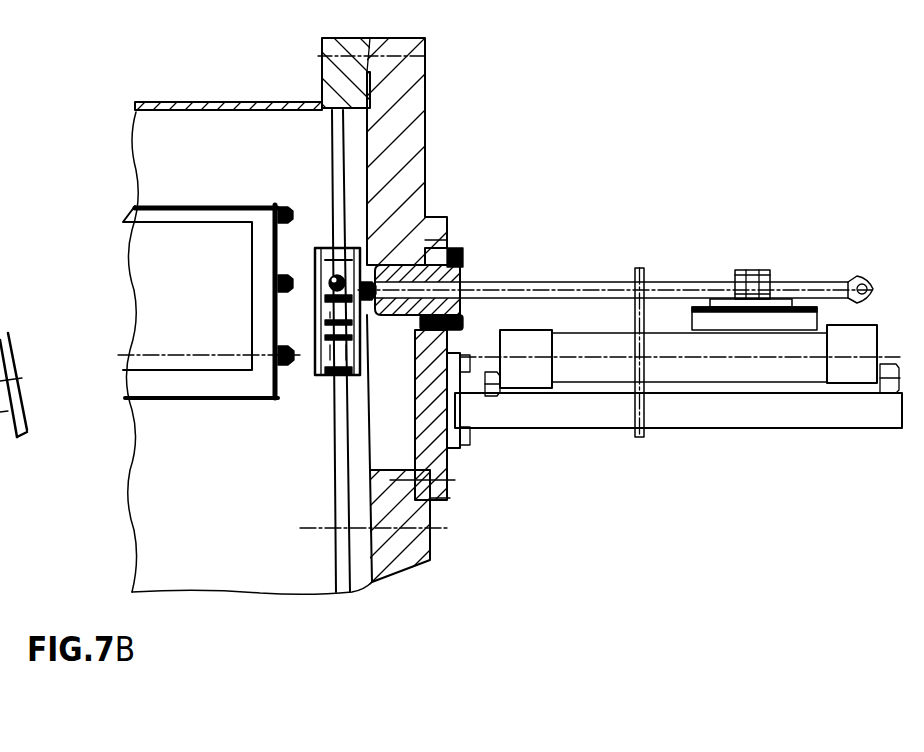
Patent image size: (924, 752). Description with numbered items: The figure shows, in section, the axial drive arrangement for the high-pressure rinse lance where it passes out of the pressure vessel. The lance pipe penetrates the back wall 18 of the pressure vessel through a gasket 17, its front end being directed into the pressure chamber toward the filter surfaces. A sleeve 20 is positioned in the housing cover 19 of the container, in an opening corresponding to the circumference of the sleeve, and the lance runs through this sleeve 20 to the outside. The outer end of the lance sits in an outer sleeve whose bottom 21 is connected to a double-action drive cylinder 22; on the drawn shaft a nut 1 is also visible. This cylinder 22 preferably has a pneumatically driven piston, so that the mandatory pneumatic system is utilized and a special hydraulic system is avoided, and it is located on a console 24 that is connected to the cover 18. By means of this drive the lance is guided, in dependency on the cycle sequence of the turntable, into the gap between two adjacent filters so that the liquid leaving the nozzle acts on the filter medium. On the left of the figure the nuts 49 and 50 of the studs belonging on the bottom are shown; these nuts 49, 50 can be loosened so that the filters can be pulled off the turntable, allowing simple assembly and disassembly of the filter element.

The nut on threaded shaft 1 is at (753, 268).
The gasket 17 is at (398, 258).
The back wall 18 is at (410, 130).
The housing cover 19 is at (446, 455).
The sleeve 20 is at (465, 268).
The bottom 21 is at (805, 320).
The double-action drive cylinder 22 is at (740, 366).
The console 24 is at (656, 411).
The nut 49 is at (284, 372).
The nut 50 is at (285, 214).